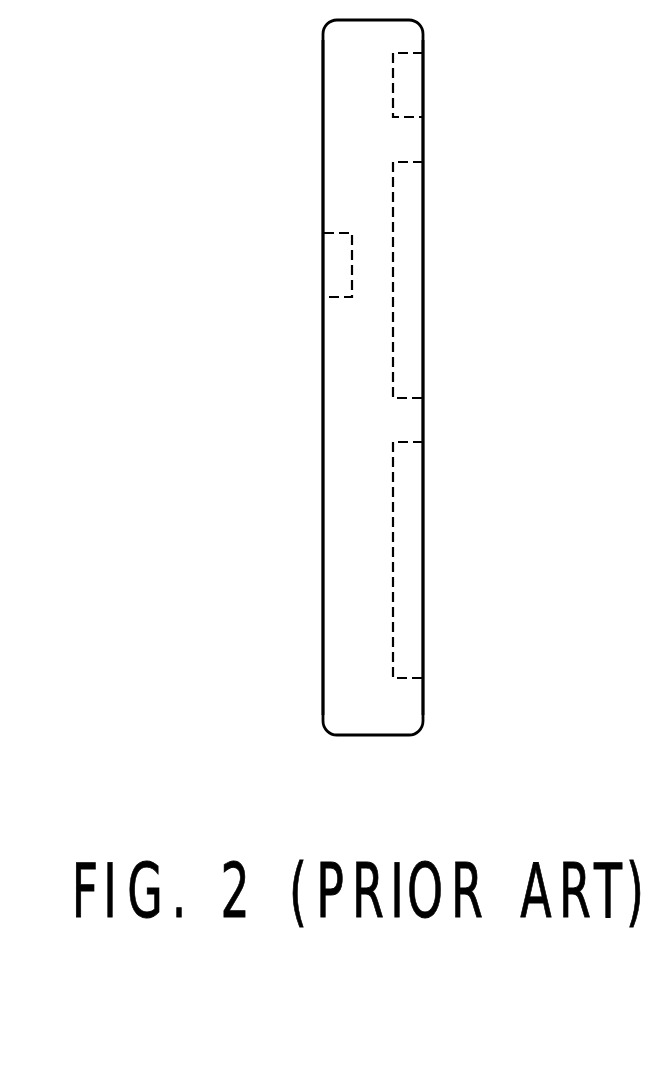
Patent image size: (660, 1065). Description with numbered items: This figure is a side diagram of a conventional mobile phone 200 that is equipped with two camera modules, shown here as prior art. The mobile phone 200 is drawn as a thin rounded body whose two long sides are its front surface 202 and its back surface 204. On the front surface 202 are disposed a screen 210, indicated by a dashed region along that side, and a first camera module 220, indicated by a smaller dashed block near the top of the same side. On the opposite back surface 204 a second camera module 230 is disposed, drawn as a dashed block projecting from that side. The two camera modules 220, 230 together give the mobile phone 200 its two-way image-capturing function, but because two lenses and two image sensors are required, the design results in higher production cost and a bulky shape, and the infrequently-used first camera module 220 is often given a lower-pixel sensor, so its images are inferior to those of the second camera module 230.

The mobile phone 200 is at (565, 800).
The front surface 202 is at (426, 133).
The back surface 204 is at (320, 136).
The screen 210 is at (408, 317).
The first camera module 220 is at (408, 87).
The second camera module 230 is at (340, 270).